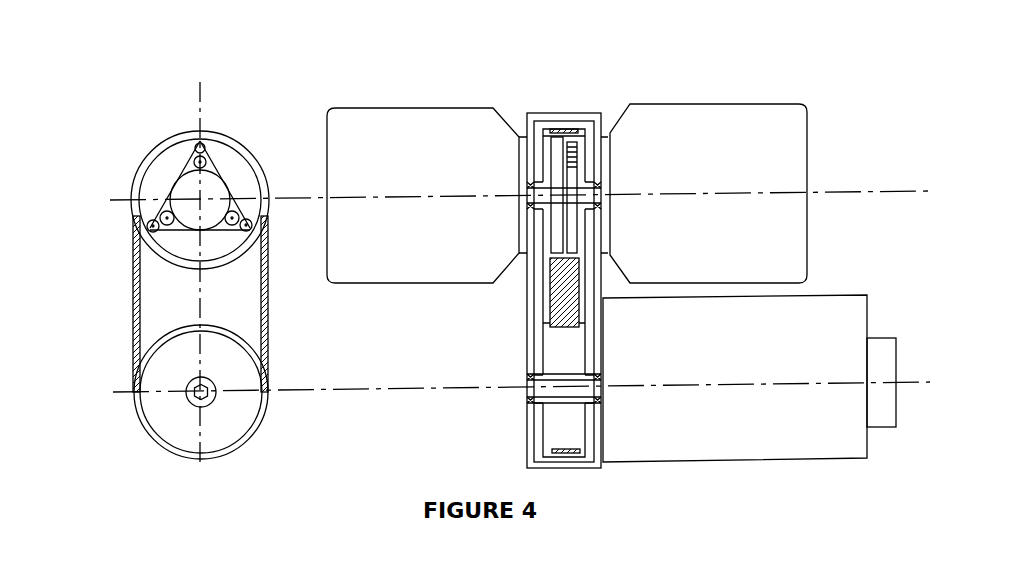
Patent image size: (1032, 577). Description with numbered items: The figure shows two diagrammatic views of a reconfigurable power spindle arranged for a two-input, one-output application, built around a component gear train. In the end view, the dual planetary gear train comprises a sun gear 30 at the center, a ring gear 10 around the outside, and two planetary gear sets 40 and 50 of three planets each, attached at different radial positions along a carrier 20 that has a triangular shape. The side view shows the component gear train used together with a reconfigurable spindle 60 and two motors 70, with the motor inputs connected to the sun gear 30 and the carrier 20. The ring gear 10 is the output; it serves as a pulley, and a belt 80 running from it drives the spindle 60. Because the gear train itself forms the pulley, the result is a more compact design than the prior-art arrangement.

The ring gear 10 is at (223, 142).
The carrier 20 is at (187, 172).
The sun gear 30 is at (213, 190).
The first planetary gear set 40 is at (163, 216).
The second planetary gear set 50 is at (155, 222).
The reconfigurable spindle 60 is at (148, 473).
The motor 70 is at (643, 133).
The belt 80 is at (268, 292).